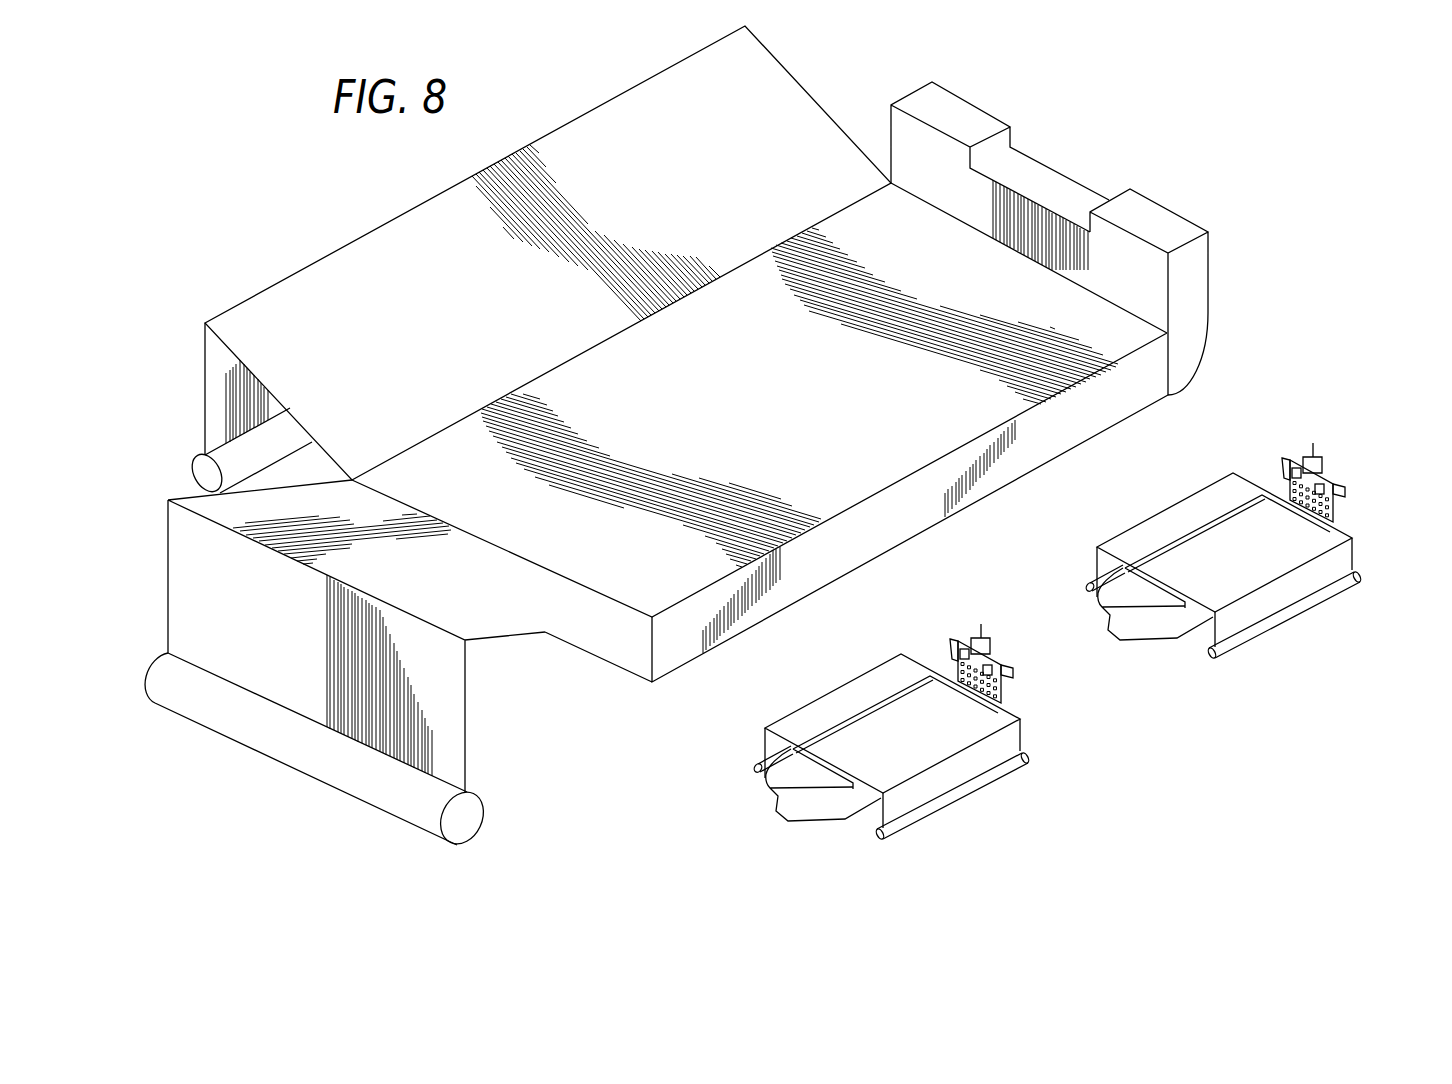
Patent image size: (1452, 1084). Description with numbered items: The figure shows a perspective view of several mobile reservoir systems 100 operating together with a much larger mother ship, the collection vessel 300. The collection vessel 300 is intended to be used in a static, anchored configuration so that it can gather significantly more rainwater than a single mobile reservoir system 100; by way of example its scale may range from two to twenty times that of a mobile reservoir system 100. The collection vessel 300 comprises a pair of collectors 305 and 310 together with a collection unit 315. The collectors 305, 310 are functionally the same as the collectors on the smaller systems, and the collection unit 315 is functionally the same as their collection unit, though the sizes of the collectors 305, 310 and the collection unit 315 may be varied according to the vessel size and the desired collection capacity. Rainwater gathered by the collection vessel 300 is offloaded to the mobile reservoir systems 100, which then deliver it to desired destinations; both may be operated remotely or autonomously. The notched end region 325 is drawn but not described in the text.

The mobile reservoir system 100 is at (1297, 633).
The collection vessel 300 is at (1193, 145).
The collector 305 is at (317, 337).
The collector 310 is at (273, 742).
The collection unit 315 is at (850, 472).
The notched end wall 325 is at (1138, 365).